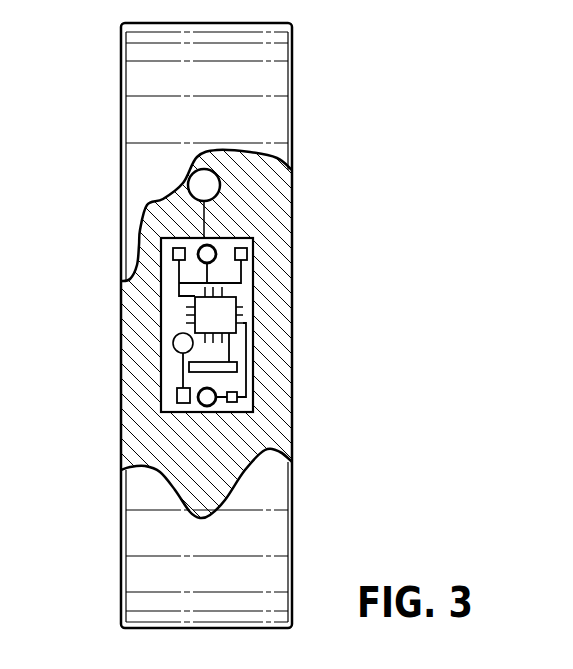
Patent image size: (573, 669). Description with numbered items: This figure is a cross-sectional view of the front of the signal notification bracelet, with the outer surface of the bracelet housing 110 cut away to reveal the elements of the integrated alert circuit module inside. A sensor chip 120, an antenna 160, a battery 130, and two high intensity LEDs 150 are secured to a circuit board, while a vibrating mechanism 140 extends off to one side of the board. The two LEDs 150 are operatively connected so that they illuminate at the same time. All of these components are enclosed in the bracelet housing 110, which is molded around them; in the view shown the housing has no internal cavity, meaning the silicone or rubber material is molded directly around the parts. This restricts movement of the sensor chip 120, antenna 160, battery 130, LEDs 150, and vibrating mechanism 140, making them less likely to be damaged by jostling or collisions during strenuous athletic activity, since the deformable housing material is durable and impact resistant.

The bracelet housing 110 is at (292, 137).
The sensor chip 120 is at (223, 307).
The battery 130 is at (190, 336).
The vibrating mechanism 140 is at (220, 184).
The high intensity LEDs 150 is at (200, 247).
The antenna 160 is at (237, 358).